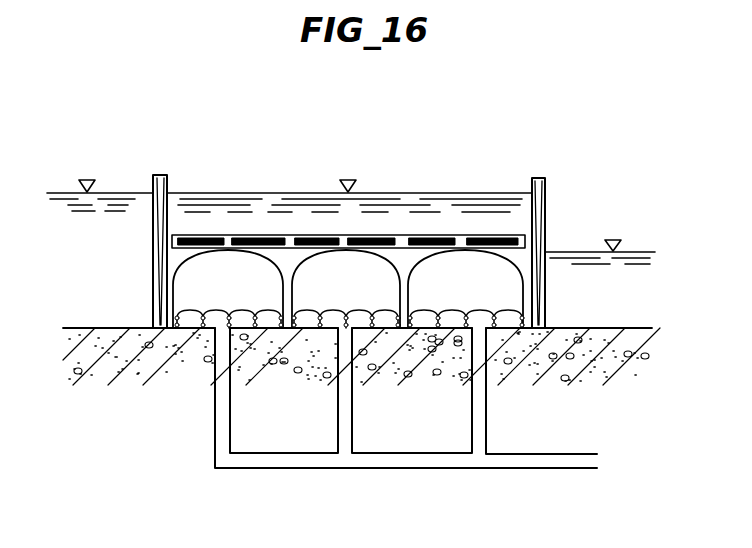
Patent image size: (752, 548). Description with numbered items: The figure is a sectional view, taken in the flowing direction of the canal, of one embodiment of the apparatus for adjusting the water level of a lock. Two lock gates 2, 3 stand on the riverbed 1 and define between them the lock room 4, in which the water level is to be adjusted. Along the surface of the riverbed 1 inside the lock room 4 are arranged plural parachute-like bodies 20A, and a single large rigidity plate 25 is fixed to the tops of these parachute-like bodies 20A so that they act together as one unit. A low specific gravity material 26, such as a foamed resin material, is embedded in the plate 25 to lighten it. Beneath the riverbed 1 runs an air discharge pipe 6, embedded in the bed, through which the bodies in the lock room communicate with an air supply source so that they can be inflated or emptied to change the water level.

The riverbed 1 is at (445, 352).
The lock gate 2 is at (159, 175).
The lock gate 3 is at (545, 179).
The lock room 4 is at (237, 187).
The air discharge pipe 6 is at (412, 458).
The parachute-like body 20A is at (523, 275).
The large rigidity plate 25 is at (352, 235).
The low specific gravity material 26 is at (426, 237).